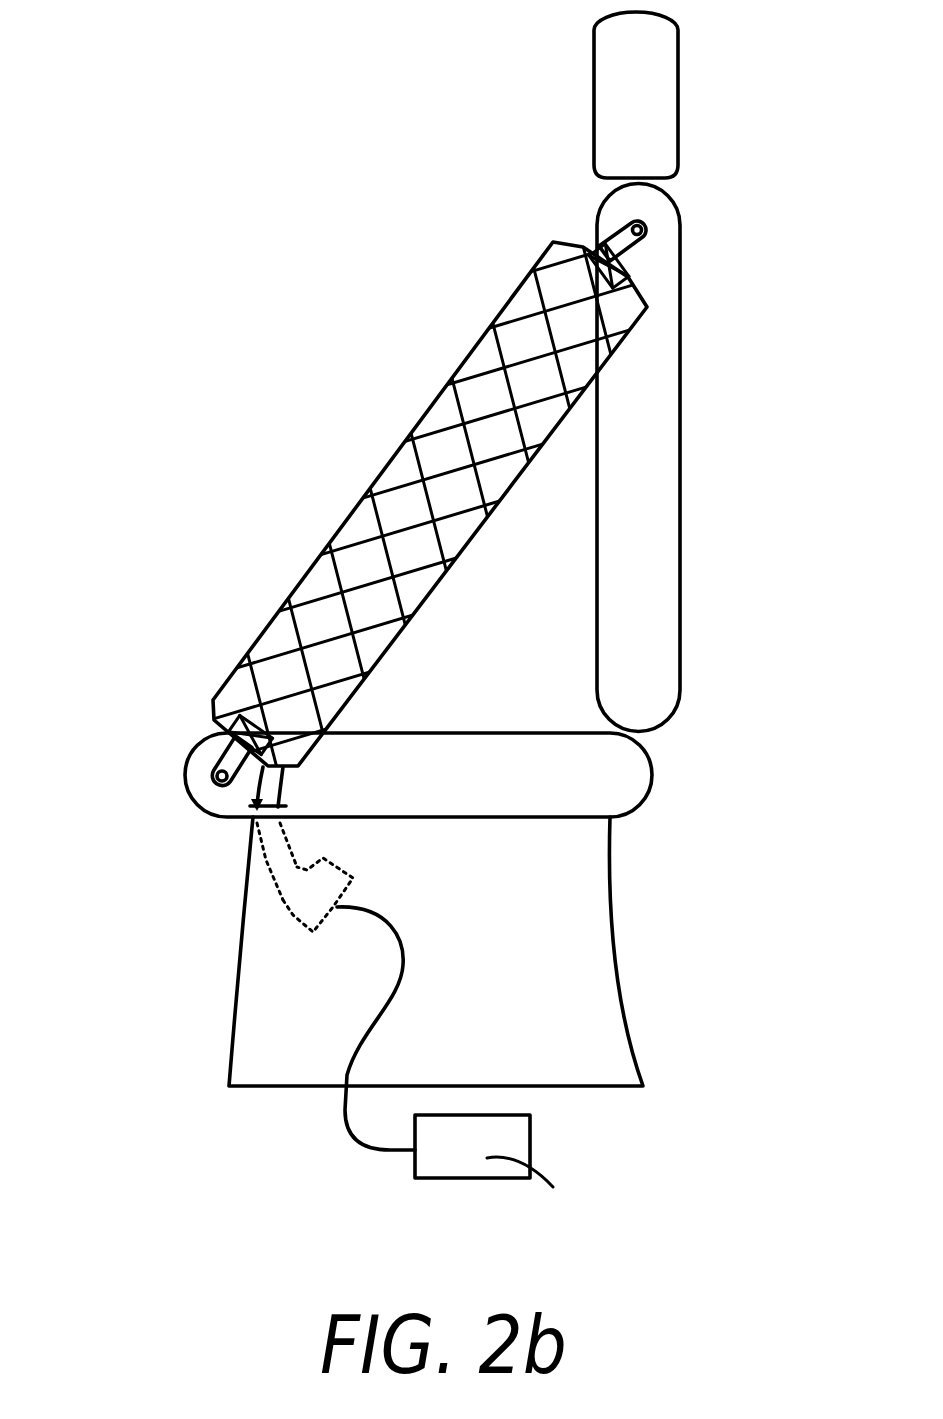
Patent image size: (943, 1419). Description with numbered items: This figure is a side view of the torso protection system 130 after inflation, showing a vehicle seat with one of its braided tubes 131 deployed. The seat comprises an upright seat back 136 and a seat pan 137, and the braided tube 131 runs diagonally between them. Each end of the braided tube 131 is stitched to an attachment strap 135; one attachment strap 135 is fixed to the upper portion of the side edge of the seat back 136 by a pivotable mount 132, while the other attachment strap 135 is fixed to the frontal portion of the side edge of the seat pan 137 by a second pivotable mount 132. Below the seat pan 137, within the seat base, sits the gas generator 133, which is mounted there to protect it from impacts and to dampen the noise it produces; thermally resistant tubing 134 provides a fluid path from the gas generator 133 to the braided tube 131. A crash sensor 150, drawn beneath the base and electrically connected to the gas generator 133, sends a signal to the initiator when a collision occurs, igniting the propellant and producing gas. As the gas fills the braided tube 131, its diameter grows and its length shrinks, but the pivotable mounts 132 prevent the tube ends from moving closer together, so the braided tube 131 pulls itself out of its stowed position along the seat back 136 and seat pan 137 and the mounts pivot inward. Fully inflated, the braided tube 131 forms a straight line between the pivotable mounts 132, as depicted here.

The torso protection system 130 is at (365, 268).
The braided tube 131 is at (395, 472).
The pivotable mount 132 is at (640, 245).
The gas generator 133 is at (307, 913).
The thermally resistant tubing 134 is at (268, 872).
The attachment strap 135 is at (633, 277).
The seat back 136 is at (670, 528).
The seat pan 137 is at (413, 781).
The crash sensor 150 is at (530, 1148).